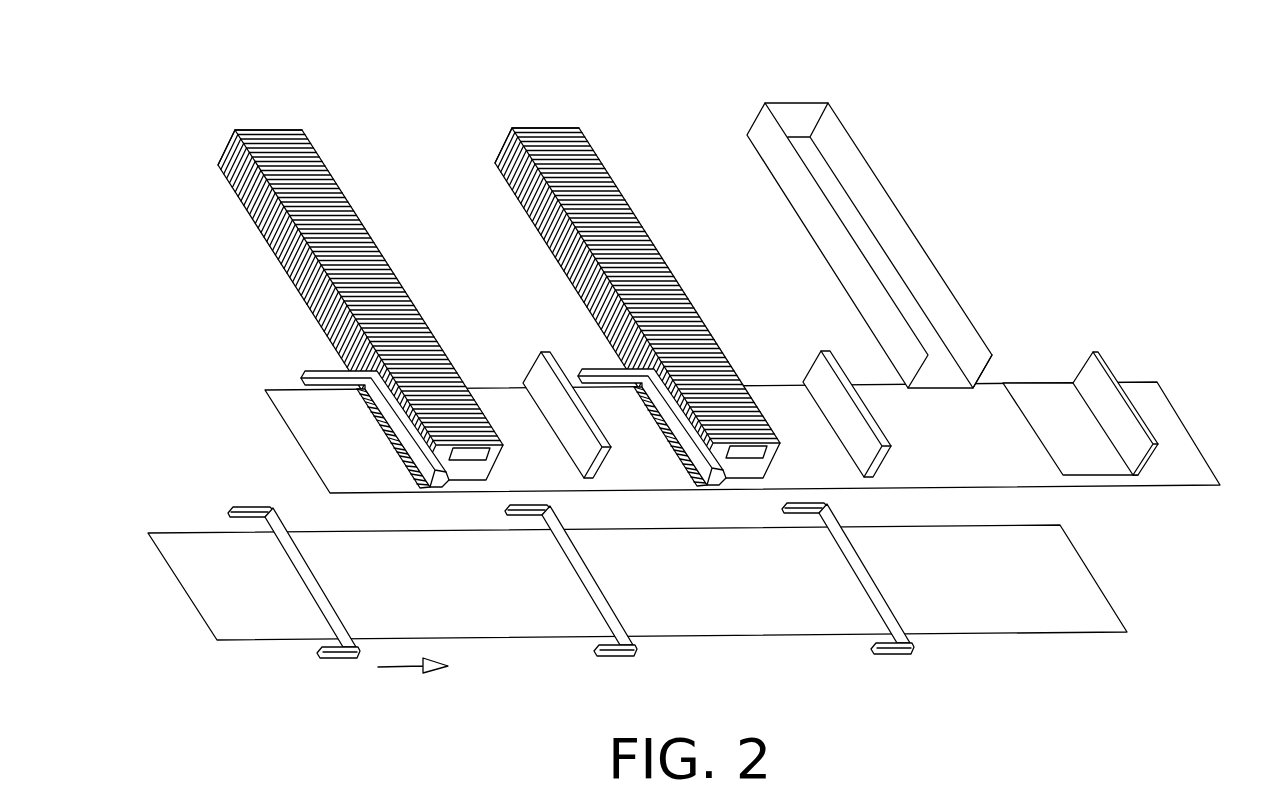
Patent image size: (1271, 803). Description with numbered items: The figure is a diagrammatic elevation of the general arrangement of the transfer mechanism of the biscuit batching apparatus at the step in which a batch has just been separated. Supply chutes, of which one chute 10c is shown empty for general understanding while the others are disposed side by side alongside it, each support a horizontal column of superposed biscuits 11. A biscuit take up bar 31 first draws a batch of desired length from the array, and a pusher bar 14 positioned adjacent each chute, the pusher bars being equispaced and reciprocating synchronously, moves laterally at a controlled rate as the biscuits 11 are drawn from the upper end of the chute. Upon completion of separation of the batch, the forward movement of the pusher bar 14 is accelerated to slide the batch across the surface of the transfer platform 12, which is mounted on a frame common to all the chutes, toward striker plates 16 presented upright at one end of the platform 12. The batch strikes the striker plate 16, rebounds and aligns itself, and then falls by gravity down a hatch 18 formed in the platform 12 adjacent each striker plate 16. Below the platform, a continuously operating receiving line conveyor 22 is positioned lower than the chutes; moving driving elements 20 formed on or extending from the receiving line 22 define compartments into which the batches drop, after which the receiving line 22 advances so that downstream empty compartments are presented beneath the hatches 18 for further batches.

The biscuits 11 is at (510, 183).
The chute 10c is at (842, 153).
The pusher bar 14 is at (310, 368).
The biscuit take up bar 31 is at (437, 467).
The hatch 18 is at (1033, 405).
The striker plate 16 is at (1102, 395).
The transfer platform 12 is at (1010, 468).
The receiving line conveyor 22 is at (1060, 589).
The driving elements 20 is at (903, 624).